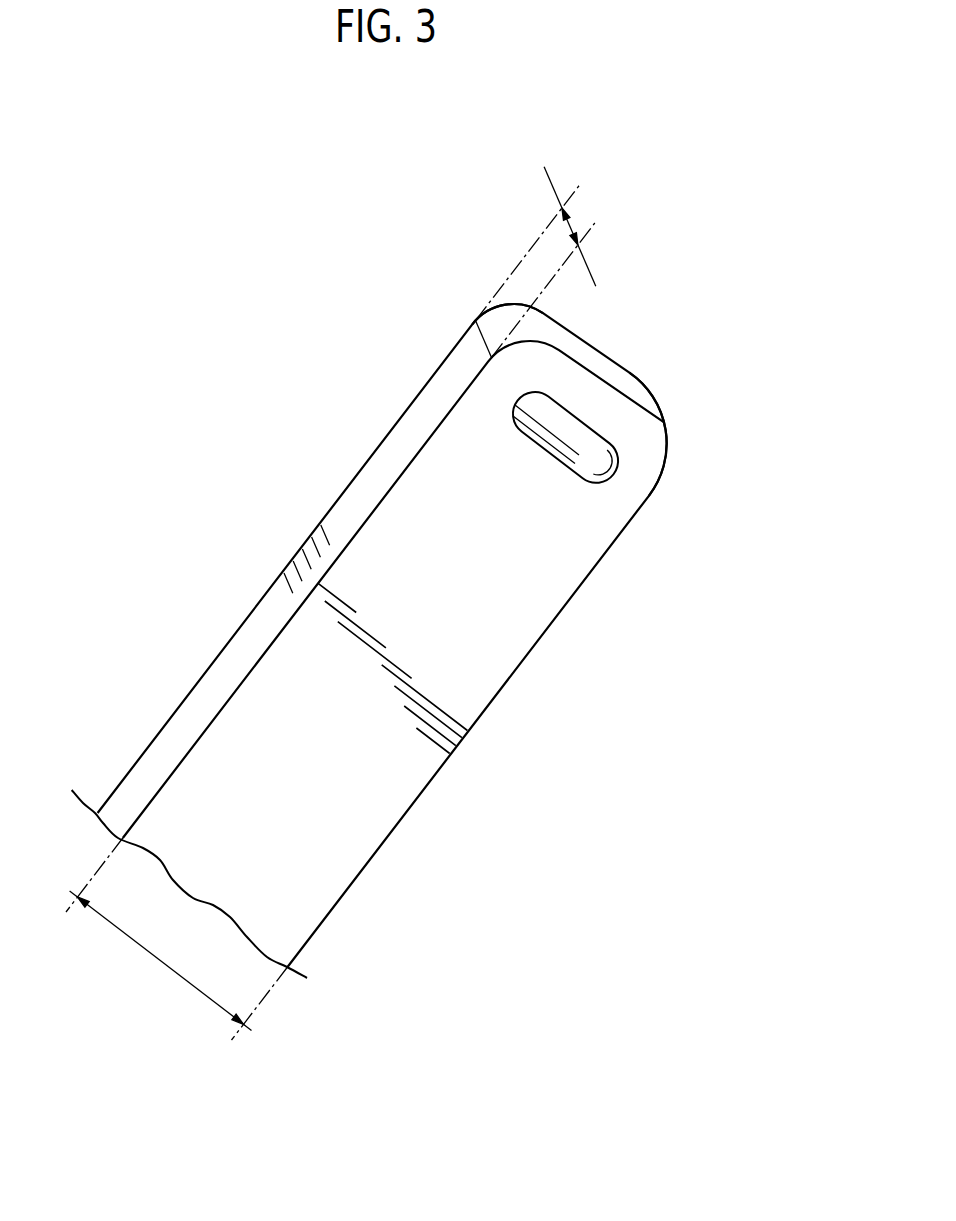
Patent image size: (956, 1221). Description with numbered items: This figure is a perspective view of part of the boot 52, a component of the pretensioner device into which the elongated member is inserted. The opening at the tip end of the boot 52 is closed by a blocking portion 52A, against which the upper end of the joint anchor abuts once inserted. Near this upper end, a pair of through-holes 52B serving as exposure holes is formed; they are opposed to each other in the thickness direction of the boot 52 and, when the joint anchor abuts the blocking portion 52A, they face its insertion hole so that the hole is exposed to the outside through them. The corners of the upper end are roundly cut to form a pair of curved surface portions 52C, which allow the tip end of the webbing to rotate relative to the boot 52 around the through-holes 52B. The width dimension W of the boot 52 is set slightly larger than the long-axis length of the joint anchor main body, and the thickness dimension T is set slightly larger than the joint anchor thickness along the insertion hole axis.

The boot 52 is at (443, 621).
The blocking portion 52A is at (604, 356).
The through-holes 52B is at (553, 428).
The curved surface portions 52C is at (476, 321).
The thickness dimension T is at (578, 230).
The width dimension W is at (167, 966).